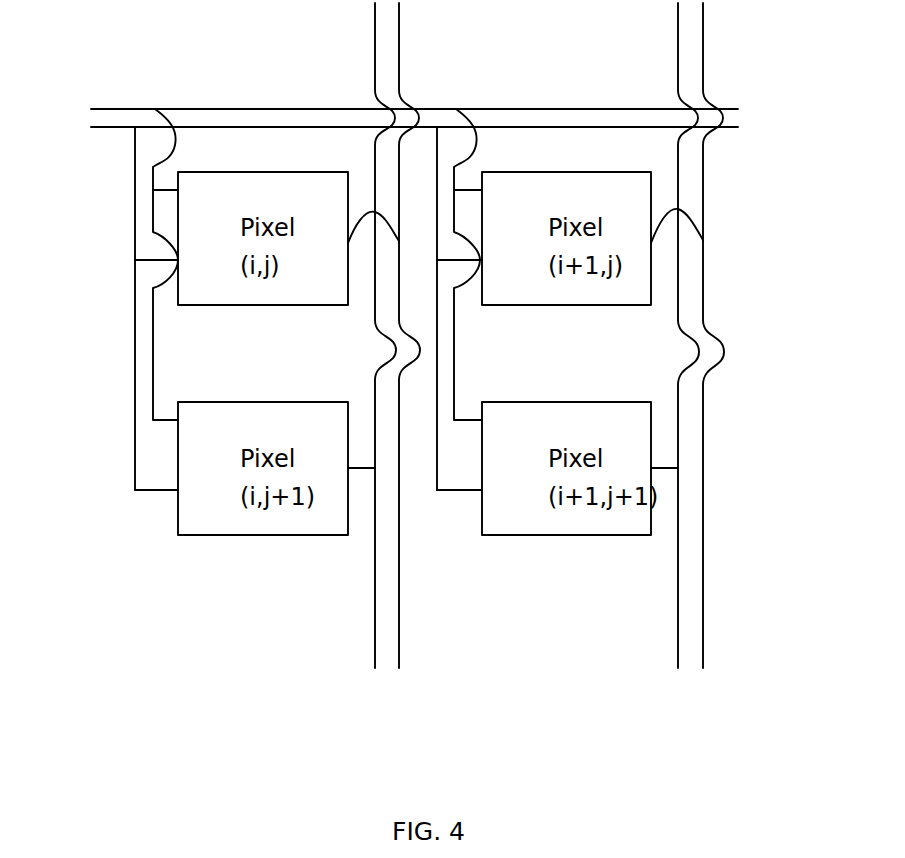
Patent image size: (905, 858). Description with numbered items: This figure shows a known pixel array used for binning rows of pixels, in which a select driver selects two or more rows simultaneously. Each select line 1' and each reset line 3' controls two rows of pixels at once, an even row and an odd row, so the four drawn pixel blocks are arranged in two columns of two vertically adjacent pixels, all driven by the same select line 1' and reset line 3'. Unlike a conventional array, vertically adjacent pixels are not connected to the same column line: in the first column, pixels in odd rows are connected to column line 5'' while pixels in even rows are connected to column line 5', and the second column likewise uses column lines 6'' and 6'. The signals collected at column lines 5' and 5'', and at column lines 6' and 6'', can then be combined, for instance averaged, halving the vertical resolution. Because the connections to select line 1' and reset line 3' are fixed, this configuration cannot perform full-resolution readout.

The select line 1' is at (405, 73).
The reset line 3' is at (405, 177).
The column line 5'' is at (334, 358).
The column line 5' is at (439, 358).
The column line 6'' is at (638, 358).
The column line 6' is at (744, 358).